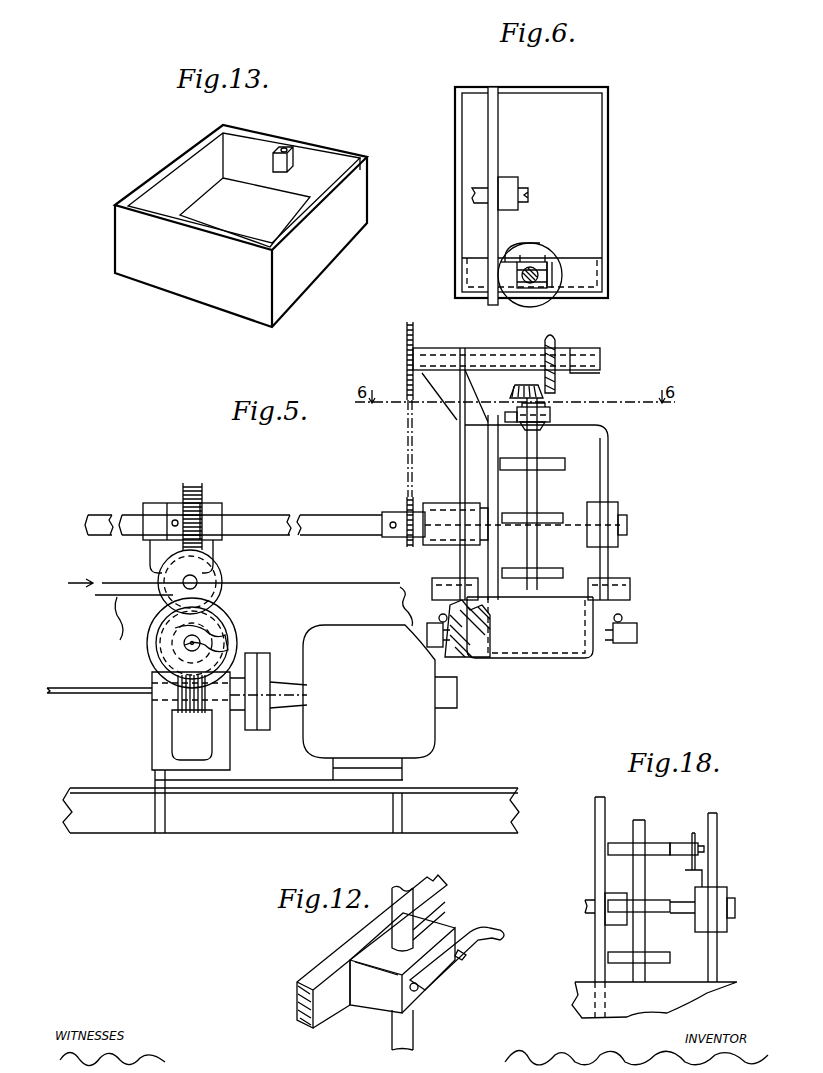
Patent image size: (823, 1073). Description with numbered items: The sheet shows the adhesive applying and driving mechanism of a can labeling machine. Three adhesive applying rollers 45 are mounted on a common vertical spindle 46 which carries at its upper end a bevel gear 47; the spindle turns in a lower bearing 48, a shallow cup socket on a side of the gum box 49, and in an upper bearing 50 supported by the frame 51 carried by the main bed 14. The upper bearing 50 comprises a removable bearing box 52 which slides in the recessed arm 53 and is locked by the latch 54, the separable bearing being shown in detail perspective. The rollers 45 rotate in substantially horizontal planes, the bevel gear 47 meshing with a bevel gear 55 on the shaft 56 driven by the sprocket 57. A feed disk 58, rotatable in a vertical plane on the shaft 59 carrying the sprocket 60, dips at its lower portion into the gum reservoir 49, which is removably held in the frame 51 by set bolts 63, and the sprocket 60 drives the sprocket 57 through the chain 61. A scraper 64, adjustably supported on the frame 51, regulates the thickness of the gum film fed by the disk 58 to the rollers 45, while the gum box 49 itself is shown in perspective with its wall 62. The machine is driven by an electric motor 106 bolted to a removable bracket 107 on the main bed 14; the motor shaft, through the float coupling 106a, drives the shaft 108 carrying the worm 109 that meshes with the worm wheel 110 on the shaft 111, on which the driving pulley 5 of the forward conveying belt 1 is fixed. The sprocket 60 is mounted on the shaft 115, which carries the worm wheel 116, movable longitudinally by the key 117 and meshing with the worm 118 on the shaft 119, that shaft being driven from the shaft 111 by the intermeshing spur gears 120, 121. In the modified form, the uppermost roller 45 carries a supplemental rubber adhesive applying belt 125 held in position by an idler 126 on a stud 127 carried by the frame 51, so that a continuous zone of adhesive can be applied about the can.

In FIG. 5, the forward conveying belt 1 is at (100, 591).
In FIG. 5, the driving pulley 5 is at (150, 655).
In FIG. 5, the main bed 14 is at (628, 606).
In FIG. 6, the adhesive applying rollers 45 is at (500, 262).
In FIG. 5, the adhesive applying rollers 45 is at (560, 463).
In FIG. 18, the adhesive applying rollers 45 is at (650, 845).
In FIG. 6, the spindle 46 is at (548, 258).
In FIG. 5, the spindle 46 is at (537, 500).
In FIG. 12, the spindle 46 is at (405, 920).
In FIG. 18, the spindle 46 is at (642, 828).
In FIG. 5, the bevel gear 47 is at (525, 385).
In FIG. 13, the lower bearing 48 is at (293, 158).
In FIG. 13, the gum box 49 is at (270, 190).
In FIG. 6, the gum box 49 is at (605, 192).
In FIG. 5, the gum box 49 is at (563, 660).
In FIG. 18, the gum box 49 is at (712, 997).
In FIG. 5, the upper bearing 50 is at (555, 415).
In FIG. 12, the upper bearing 50 is at (388, 1000).
In FIG. 5, the frame 51 is at (610, 490).
In FIG. 12, the frame 51 is at (335, 960).
In FIG. 18, the frame 51 is at (718, 890).
In FIG. 6, the removable bearing box 52 is at (531, 262).
In FIG. 5, the removable bearing box 52 is at (545, 410).
In FIG. 12, the removable bearing box 52 is at (430, 945).
In FIG. 6, the recessed arm 53 is at (550, 275).
In FIG. 12, the recessed arm 53 is at (385, 965).
In FIG. 6, the latch 54 is at (512, 242).
In FIG. 5, the latch 54 is at (507, 410).
In FIG. 12, the latch 54 is at (496, 940).
In FIG. 5, the bevel gear 55 is at (555, 345).
In FIG. 5, the shaft 56 is at (483, 360).
In FIG. 5, the sprocket 57 is at (407, 325).
In FIG. 6, the feed disk 58 is at (497, 135).
In FIG. 5, the feed disk 58 is at (488, 450).
In FIG. 18, the feed disk 58 is at (595, 825).
In FIG. 6, the shaft 59 is at (523, 185).
In FIG. 5, the shaft 59 is at (485, 505).
In FIG. 18, the shaft 59 is at (592, 895).
In FIG. 5, the sprocket 60 is at (405, 540).
In FIG. 5, the chain 61 is at (407, 437).
In FIG. 13, the box wall 62 is at (187, 275).
In FIG. 5, the box wall 62 is at (523, 660).
In FIG. 5, the set bolts 63 is at (640, 630).
In FIG. 5, the scraper 64 is at (505, 605).
In FIG. 5, the electric motor 106 is at (306, 702).
In FIG. 5, the float coupling 106a is at (262, 730).
In FIG. 5, the removable bracket 107 is at (290, 796).
In FIG. 5, the shaft 108 is at (158, 712).
In FIG. 5, the worm 109 is at (192, 717).
In FIG. 5, the worm wheel 110 is at (215, 648).
In FIG. 5, the shaft 111 is at (200, 640).
In FIG. 5, the shaft 115 is at (315, 515).
In FIG. 5, the worm wheel 116 is at (195, 485).
In FIG. 5, the key 117 is at (235, 530).
In FIG. 5, the worm 118 is at (222, 578).
In FIG. 5, the shaft 119 is at (196, 579).
In FIG. 5, the spur gear 120 is at (165, 580).
In FIG. 5, the spur gear 121 is at (228, 622).
In FIG. 18, the supplemental adhesive applying belt 125 is at (684, 843).
In FIG. 18, the idler 126 is at (688, 858).
In FIG. 18, the stud 127 is at (700, 845).